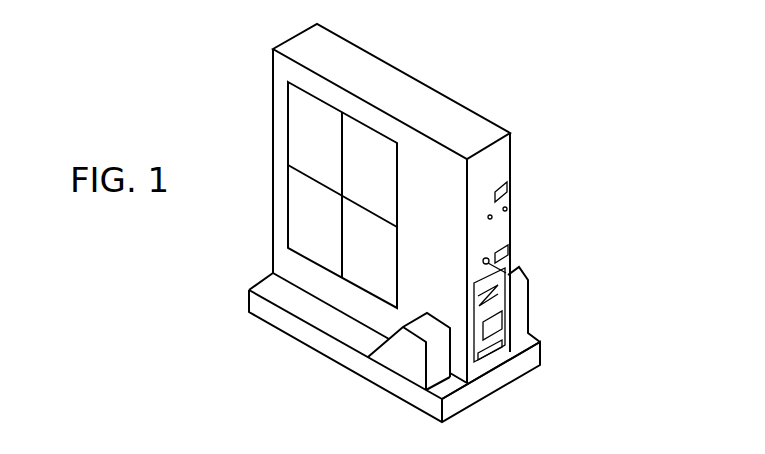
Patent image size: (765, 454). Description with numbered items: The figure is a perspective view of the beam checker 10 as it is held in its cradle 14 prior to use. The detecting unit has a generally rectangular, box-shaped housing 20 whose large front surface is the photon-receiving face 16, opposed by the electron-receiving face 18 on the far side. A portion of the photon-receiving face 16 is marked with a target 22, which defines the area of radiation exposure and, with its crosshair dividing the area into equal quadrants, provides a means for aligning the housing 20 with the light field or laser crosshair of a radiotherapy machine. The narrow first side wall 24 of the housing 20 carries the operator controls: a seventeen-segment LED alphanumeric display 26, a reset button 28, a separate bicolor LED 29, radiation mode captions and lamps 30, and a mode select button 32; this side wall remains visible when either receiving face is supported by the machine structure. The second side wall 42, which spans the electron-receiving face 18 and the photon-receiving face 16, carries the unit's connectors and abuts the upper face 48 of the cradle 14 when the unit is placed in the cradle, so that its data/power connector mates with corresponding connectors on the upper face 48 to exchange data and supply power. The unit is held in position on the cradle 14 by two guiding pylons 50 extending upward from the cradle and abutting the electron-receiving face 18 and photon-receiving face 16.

The beam checker 10 is at (544, 64).
The cradle 14 is at (538, 360).
The photon-receiving face 16 is at (268, 127).
The electron-receiving face 18 is at (405, 62).
The housing 20 is at (311, 46).
The target 22 is at (307, 175).
The first side wall 24 is at (501, 184).
The alphanumeric display 26 is at (507, 274).
The reset button 28 is at (506, 252).
The bicolor LED 29 is at (490, 262).
The radiation mode captions and lamps 30 is at (521, 221).
The mode select button 32 is at (498, 196).
The second side wall 42 is at (490, 376).
The upper face 48 is at (340, 326).
The guiding pylons 50 is at (417, 369).